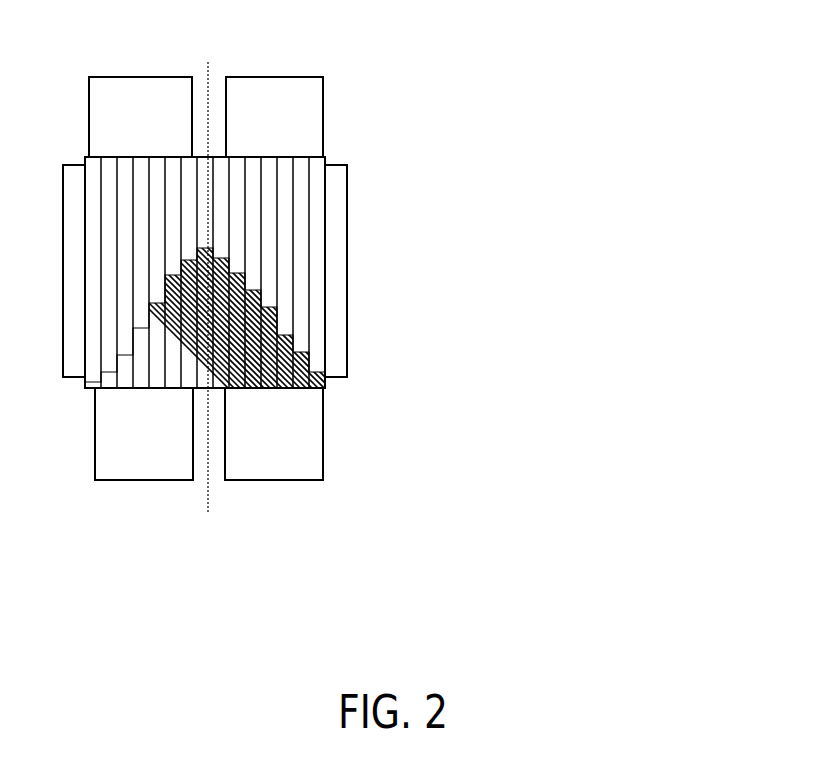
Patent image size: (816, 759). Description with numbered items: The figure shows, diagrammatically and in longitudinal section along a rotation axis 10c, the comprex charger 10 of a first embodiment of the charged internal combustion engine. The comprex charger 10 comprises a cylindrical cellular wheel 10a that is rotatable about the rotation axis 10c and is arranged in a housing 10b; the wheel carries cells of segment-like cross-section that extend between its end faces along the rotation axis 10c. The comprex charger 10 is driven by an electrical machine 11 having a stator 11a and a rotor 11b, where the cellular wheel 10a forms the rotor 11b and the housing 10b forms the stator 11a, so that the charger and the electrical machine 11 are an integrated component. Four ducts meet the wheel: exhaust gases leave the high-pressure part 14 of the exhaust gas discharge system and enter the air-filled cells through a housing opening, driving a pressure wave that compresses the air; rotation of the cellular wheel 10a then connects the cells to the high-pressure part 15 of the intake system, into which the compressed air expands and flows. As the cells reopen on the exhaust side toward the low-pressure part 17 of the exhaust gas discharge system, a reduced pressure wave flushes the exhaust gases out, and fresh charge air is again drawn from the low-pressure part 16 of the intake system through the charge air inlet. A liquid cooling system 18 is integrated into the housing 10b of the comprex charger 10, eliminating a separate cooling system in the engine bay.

The comprex charger 10 is at (397, 292).
The electrical machine 11 is at (397, 292).
The cellular wheel 10a is at (382, 316).
The housing 10b is at (419, 272).
The rotation axis 10c is at (203, 513).
The stator 11a is at (419, 272).
The rotor 11b is at (325, 290).
The high-pressure part of the exhaust gas discharge system 14 is at (312, 450).
The high-pressure part of the intake system 15 is at (133, 93).
The low-pressure part of the intake system 16 is at (323, 108).
The low-pressure part of the exhaust gas discharge system 17 is at (130, 472).
The liquid cooling system 18 is at (335, 233).